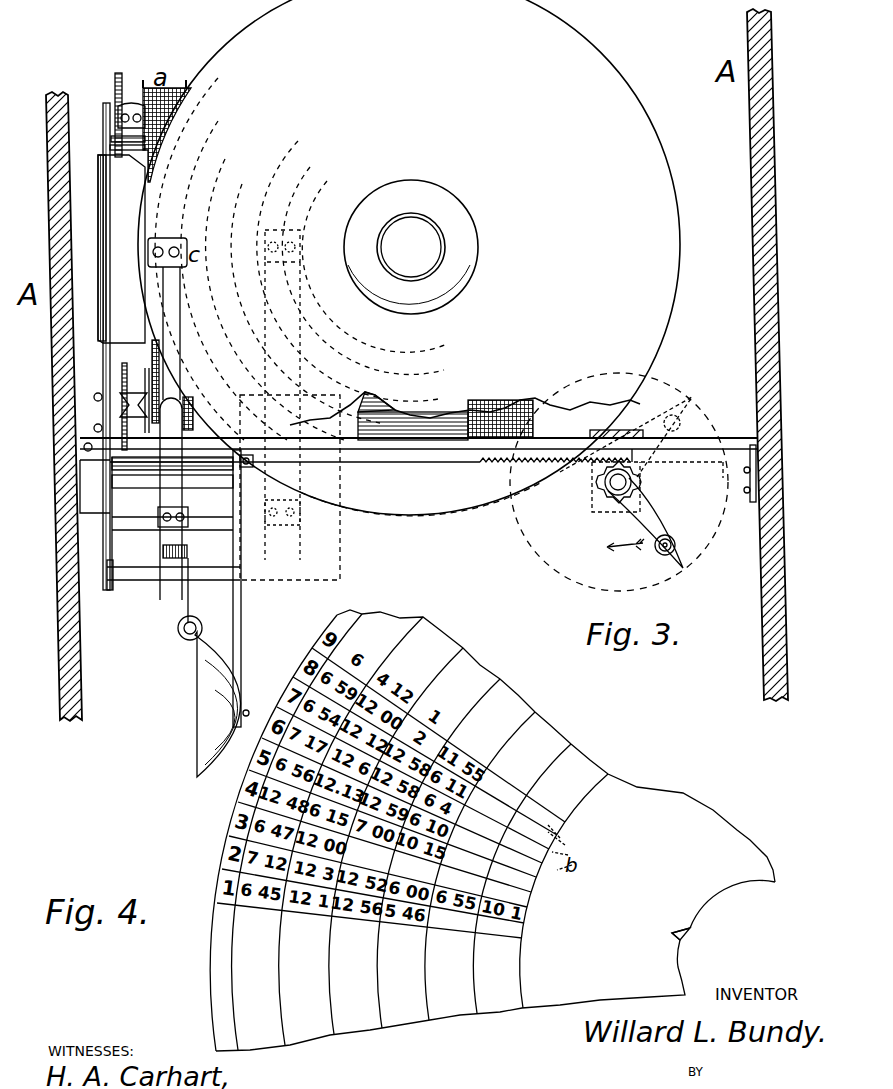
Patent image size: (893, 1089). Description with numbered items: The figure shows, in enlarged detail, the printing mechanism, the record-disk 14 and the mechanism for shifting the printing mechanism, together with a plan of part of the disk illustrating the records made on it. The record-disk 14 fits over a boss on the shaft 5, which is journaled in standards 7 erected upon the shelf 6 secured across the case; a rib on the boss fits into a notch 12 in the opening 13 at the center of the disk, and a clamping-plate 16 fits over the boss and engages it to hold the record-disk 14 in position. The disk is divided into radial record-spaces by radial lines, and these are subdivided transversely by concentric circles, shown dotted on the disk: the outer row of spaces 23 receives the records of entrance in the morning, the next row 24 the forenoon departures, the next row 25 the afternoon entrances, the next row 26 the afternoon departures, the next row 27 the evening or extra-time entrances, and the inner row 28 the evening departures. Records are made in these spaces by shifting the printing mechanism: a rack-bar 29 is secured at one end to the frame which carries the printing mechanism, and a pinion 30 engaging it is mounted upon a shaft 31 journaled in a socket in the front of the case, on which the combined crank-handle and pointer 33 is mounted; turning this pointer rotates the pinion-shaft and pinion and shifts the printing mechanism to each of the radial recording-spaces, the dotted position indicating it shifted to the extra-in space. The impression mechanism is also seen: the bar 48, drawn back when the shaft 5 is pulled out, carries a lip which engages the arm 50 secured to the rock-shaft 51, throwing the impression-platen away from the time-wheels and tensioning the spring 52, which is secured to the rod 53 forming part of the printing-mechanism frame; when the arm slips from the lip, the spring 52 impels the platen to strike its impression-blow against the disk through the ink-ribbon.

In FIG. 3, the shaft 5 is at (411, 247).
In FIG. 3, the shelf 6 is at (432, 443).
In FIG. 3, the standards 7 is at (413, 416).
In FIG. 4, the notch 12 is at (689, 939).
In FIG. 4, the opening 13 is at (732, 912).
In FIG. 3, the record-disk 14 is at (409, 258).
In FIG. 4, the record-disk 14 is at (492, 830).
In FIG. 3, the clamping-plate 16 is at (411, 247).
In FIG. 3, the outer row of spaces 23 is at (199, 259).
In FIG. 4, the outer row of spaces 23 is at (327, 832).
In FIG. 3, the row of spaces 24 is at (234, 280).
In FIG. 4, the row of spaces 24 is at (370, 841).
In FIG. 3, the row of spaces 25 is at (275, 299).
In FIG. 4, the row of spaces 25 is at (414, 853).
In FIG. 3, the row of spaces 26 is at (305, 303).
In FIG. 4, the row of spaces 26 is at (455, 866).
In FIG. 3, the row of spaces 27 is at (347, 271).
In FIG. 4, the row of spaces 27 is at (497, 878).
In FIG. 3, the inner row of spaces 28 is at (364, 271).
In FIG. 4, the inner row of spaces 28 is at (539, 891).
In FIG. 3, the rack-bar 29 is at (418, 466).
In FIG. 3, the pinion 30 is at (600, 487).
In FIG. 3, the shaft 31 is at (609, 500).
In FIG. 3, the combined crank-handle and pointer 33 is at (646, 523).
In FIG. 3, the bar 48 is at (177, 560).
In FIG. 3, the arm 50 is at (168, 398).
In FIG. 3, the rock-shaft 51 is at (172, 483).
In FIG. 3, the spring 52 is at (171, 499).
In FIG. 3, the rod 53 is at (173, 548).